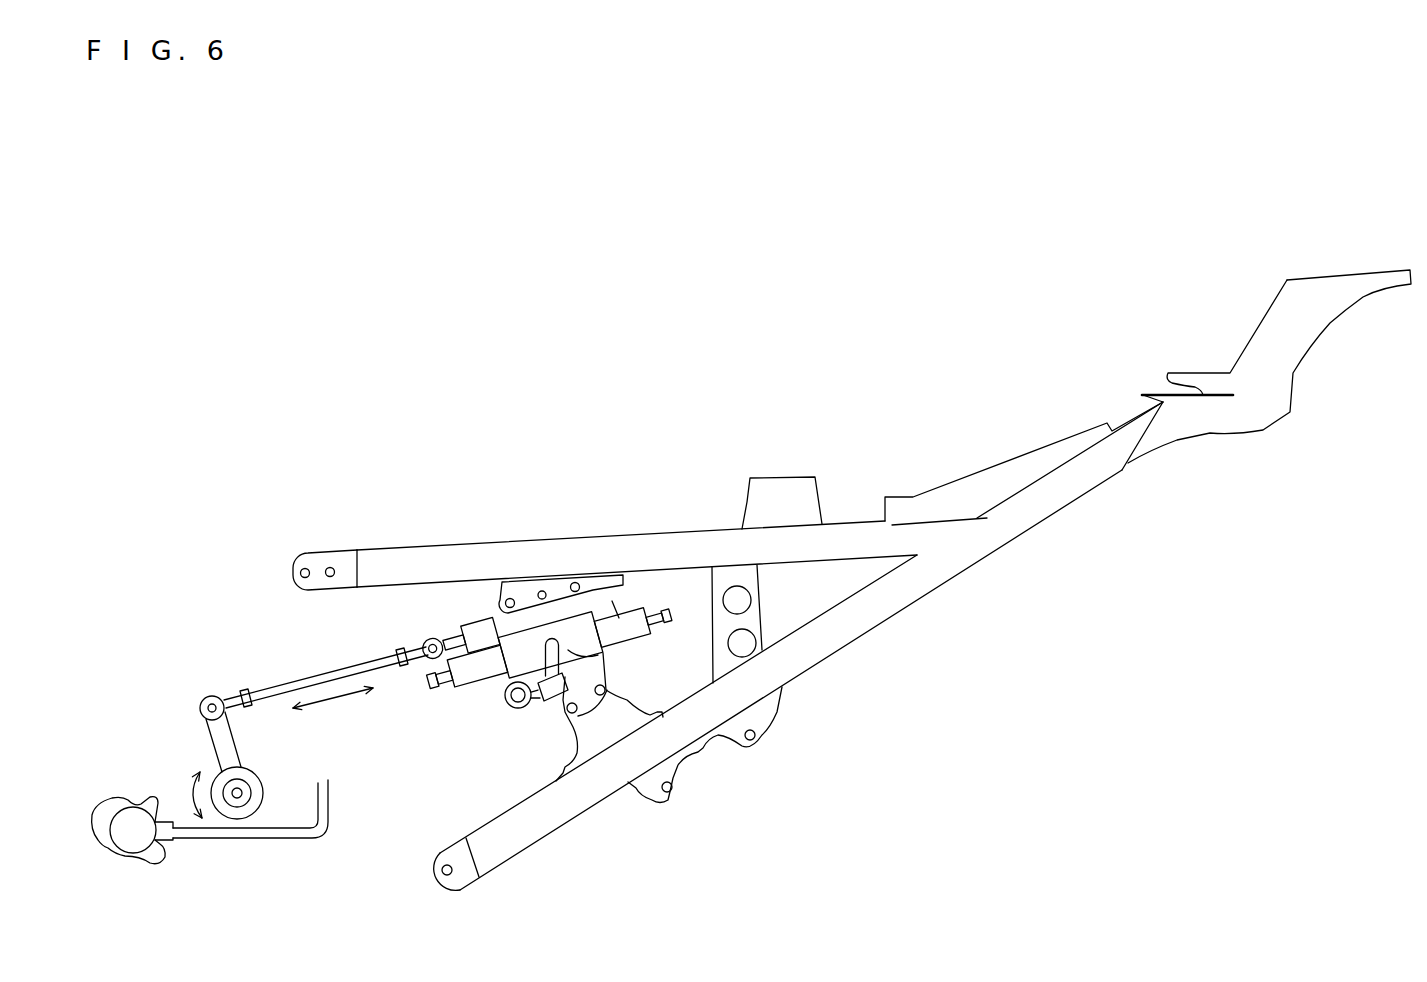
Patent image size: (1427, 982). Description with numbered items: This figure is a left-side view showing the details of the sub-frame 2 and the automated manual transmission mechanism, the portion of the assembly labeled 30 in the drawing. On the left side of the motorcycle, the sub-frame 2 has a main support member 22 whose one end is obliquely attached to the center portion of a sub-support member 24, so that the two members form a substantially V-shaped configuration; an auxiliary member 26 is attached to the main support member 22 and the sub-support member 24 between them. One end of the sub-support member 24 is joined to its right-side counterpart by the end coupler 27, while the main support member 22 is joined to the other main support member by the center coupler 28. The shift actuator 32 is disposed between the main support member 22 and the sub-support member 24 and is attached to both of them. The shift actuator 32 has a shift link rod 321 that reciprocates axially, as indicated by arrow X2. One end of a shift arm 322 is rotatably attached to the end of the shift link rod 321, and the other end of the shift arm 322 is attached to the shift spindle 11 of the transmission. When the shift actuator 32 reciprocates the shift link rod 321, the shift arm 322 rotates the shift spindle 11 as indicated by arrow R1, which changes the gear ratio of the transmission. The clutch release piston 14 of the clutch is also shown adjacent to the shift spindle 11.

The sub-frame 2 is at (1047, 258).
The shift spindle 11 is at (238, 797).
The clutch release piston 14 is at (128, 823).
The main support member 22 is at (505, 552).
The sub-support member 24 is at (812, 656).
The auxiliary member 26 is at (720, 627).
The end coupler 27 is at (1188, 406).
The center coupler 28 is at (780, 488).
The adjusting mechanism 30 is at (402, 820).
The shift actuator 32 is at (508, 652).
The shift link rod 321 is at (290, 680).
The shift arm 322 is at (217, 753).
The arrow R1 is at (184, 785).
The arrow X2 is at (337, 700).